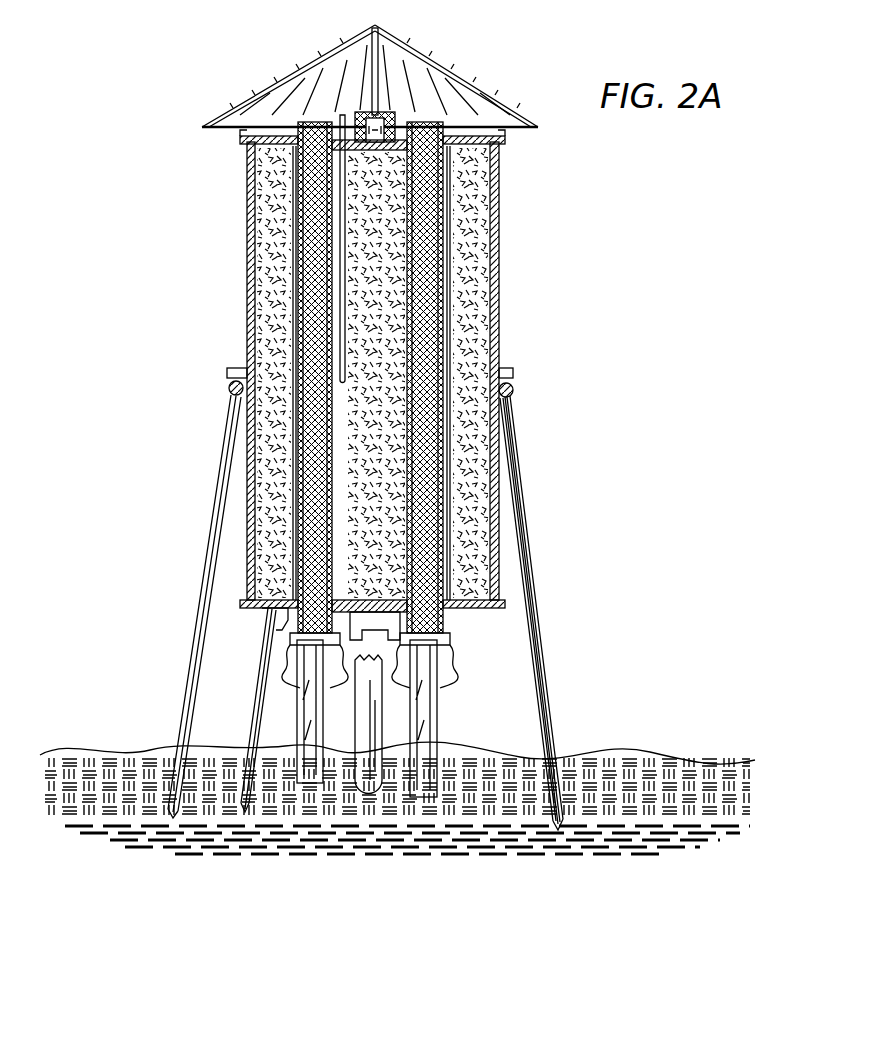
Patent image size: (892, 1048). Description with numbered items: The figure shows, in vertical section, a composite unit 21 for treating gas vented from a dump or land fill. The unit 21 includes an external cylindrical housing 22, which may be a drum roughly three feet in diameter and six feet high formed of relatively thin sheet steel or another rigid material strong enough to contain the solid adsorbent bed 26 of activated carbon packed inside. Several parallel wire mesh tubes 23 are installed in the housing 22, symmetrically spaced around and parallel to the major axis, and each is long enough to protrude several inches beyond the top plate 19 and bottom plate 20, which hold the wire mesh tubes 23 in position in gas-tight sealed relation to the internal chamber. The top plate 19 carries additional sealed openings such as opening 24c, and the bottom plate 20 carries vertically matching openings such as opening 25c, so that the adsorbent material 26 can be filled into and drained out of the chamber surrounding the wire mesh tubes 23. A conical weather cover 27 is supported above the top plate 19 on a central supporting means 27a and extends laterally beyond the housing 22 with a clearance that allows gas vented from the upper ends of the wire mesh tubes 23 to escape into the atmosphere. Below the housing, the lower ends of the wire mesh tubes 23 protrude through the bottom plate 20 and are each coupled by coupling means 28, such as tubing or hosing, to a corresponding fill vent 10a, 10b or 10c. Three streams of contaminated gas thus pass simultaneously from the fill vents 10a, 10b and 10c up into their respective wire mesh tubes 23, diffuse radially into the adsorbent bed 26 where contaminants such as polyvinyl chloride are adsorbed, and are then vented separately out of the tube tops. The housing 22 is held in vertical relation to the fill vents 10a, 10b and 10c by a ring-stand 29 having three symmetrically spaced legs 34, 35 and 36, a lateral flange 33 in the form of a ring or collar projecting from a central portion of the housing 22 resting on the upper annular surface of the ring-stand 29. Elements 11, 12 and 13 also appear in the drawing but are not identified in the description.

The fill vent 10a is at (362, 732).
The fill vent 10b is at (314, 715).
The fill vent 10c is at (440, 742).
The ground surface 11 is at (625, 762).
The water table 12 is at (655, 830).
The central pipe 13 is at (346, 112).
The top plate 19 is at (275, 140).
The bottom plate 20 is at (521, 620).
The unit 21 is at (225, 234).
The external cylindrical housing 22 is at (486, 352).
The wire mesh tube 23 is at (290, 287).
The opening 24c is at (392, 118).
The opening 25c is at (402, 636).
The solid adsorbent bed 26 is at (270, 455).
The conical weather cover 27 is at (313, 62).
The central supporting means 27a is at (380, 60).
The coupling means 28 is at (292, 690).
The ring-stand 29 is at (511, 398).
The lateral flange 33 is at (228, 371).
The leg 34 is at (283, 636).
The leg 35 is at (268, 638).
The leg 36 is at (538, 693).